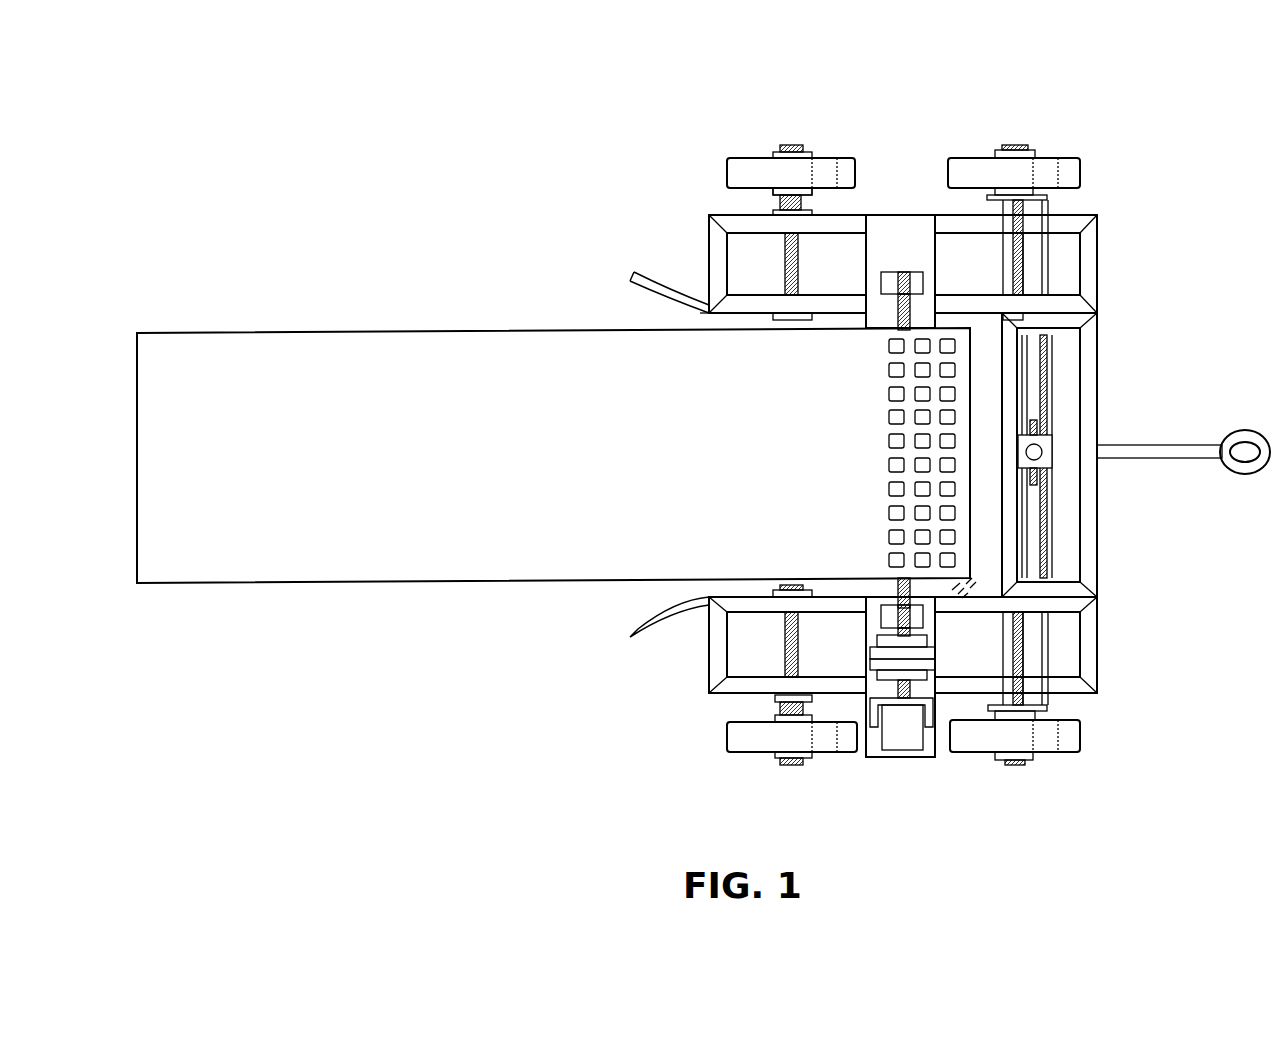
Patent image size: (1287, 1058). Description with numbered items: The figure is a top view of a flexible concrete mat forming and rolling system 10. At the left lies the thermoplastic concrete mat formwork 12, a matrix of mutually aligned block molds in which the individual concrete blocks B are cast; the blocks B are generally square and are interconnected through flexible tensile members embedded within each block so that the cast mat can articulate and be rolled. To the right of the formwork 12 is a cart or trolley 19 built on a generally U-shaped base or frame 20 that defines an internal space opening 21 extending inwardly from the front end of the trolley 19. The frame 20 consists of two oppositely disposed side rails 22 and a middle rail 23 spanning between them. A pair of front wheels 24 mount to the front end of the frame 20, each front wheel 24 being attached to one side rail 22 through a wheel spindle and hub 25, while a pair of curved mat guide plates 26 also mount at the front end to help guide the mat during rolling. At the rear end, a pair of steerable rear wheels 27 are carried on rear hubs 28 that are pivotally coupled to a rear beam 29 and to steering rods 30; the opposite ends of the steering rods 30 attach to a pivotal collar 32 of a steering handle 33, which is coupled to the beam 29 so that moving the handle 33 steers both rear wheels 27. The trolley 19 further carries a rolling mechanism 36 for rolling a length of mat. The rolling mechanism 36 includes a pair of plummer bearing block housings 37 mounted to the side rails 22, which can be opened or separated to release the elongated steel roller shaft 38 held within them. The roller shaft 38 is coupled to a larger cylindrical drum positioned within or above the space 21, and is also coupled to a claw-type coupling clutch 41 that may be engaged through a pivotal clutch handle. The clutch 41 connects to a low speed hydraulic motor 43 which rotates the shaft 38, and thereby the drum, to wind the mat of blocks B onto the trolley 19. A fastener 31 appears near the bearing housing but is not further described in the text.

The concrete mat forming and rolling system 10 is at (538, 128).
The concrete mat formwork 12 is at (473, 582).
The trolley 19 is at (1130, 578).
The frame 20 is at (1177, 193).
The internal space opening 21 is at (672, 590).
The side rails 22 is at (900, 215).
The middle rail 23 is at (1097, 368).
The front wheels 24 is at (826, 160).
The wheel spindle and hub 25 is at (812, 190).
The curved mat guide plates 26 is at (632, 284).
The steerable rear wheels 27 is at (1048, 160).
The rear hub 28 is at (1000, 185).
The rear beam 29 is at (1015, 265).
The steering rod 30 is at (1043, 250).
The fastener 31 is at (945, 597).
The pivotal collar 32 is at (1093, 428).
The steering handle 33 is at (1173, 460).
The rolling mechanism 36 is at (929, 260).
The plummer bearing block housings 37 is at (892, 290).
The roller shaft 38 is at (897, 578).
The coupling clutch 41 is at (935, 656).
The hydraulic motor 43 is at (925, 730).
The concrete blocks B is at (888, 420).